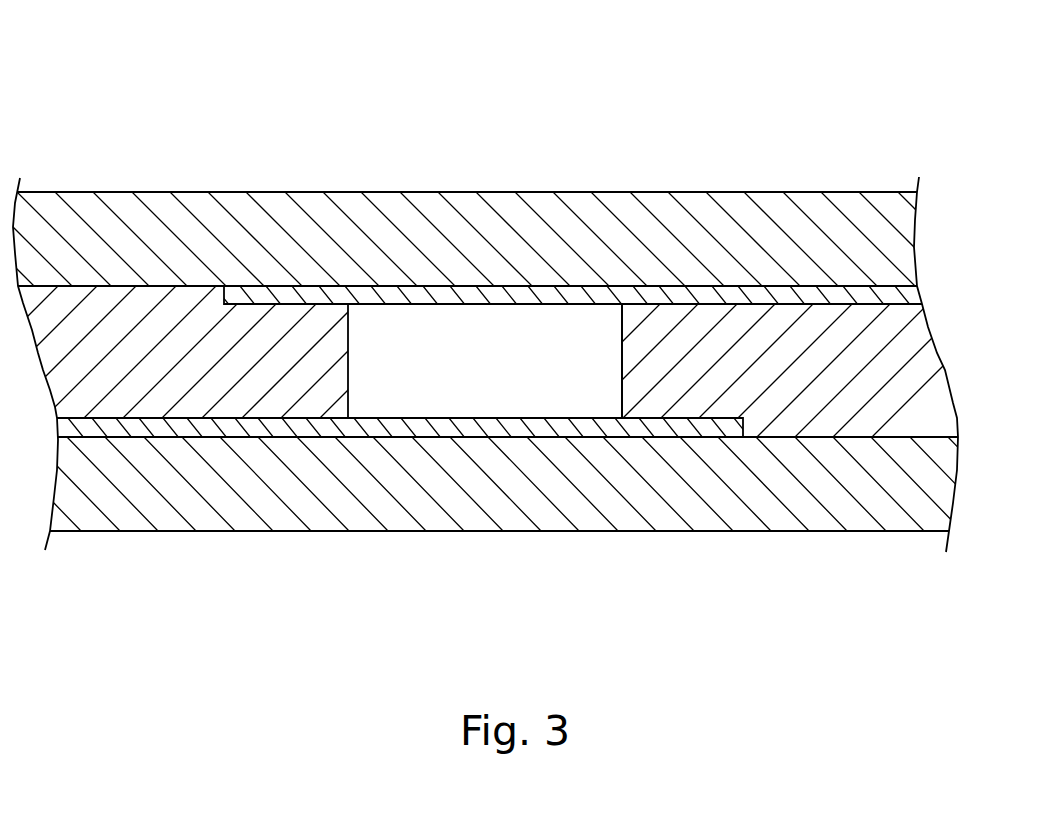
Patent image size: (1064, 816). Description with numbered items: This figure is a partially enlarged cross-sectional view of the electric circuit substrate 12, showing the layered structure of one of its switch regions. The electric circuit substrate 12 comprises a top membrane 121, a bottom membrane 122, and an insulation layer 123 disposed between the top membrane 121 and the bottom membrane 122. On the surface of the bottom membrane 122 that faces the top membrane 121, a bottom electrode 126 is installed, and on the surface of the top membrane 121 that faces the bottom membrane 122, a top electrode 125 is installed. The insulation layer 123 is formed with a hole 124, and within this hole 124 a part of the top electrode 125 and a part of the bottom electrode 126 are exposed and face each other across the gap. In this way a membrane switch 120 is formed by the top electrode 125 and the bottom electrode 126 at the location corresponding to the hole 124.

The electric circuit substrate 12 is at (955, 142).
The membrane switch 120 is at (648, 337).
The top membrane 121 is at (241, 200).
The bottom membrane 122 is at (700, 503).
The insulation layer 123 is at (137, 307).
The hole 124 is at (387, 337).
The top electrode 125 is at (513, 300).
The bottom electrode 126 is at (397, 427).